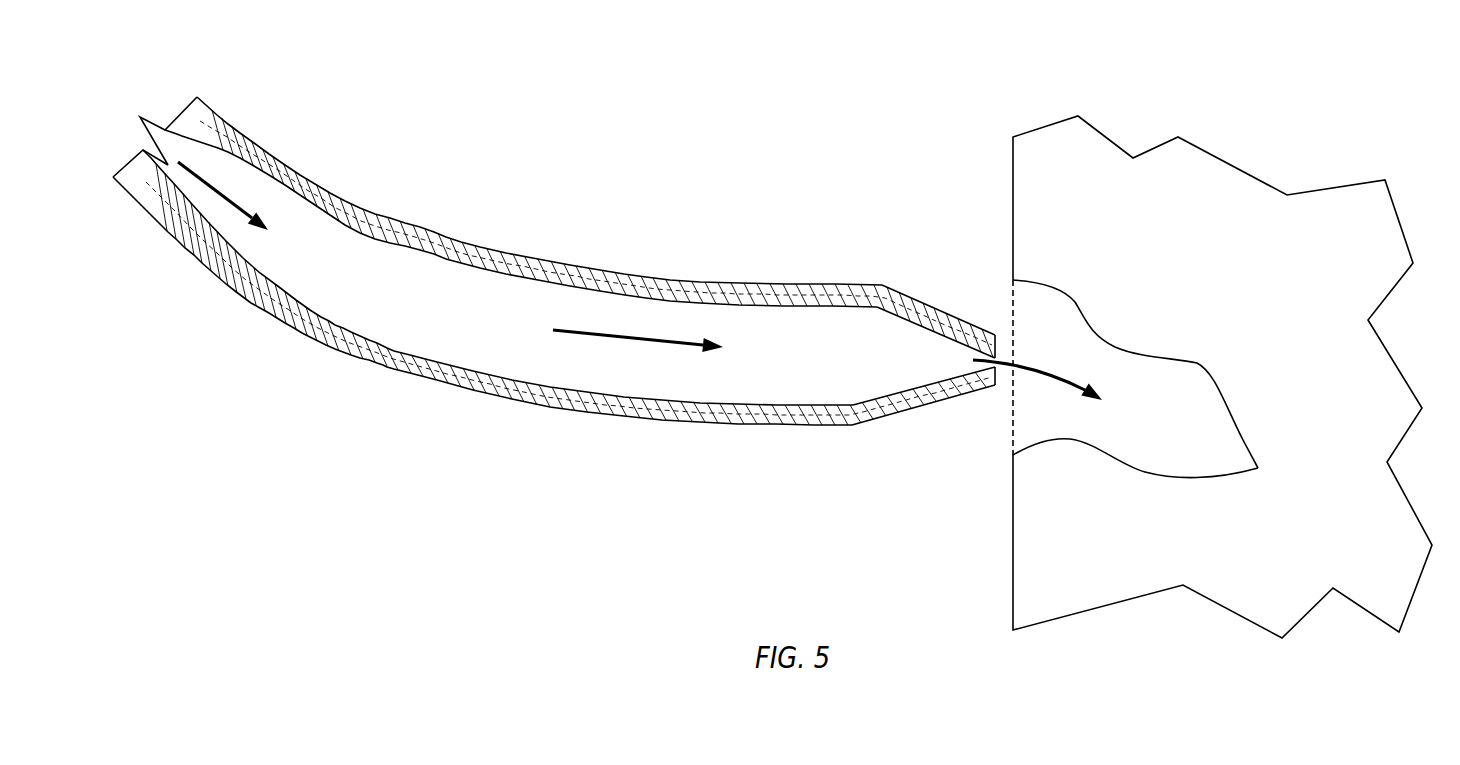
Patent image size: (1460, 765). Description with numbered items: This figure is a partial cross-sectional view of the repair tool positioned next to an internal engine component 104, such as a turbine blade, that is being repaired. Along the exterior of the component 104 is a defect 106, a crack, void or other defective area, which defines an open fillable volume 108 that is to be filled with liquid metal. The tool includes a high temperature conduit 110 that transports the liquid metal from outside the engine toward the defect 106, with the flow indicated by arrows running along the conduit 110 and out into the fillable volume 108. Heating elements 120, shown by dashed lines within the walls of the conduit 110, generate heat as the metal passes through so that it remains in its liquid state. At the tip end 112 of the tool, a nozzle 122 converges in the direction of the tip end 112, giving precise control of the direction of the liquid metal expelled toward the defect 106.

The internal engine component 104 is at (1232, 162).
The defect 106 is at (1072, 297).
The fillable volume 108 is at (1183, 424).
The high temperature conduit 110 is at (229, 118).
The tip end 112 is at (978, 327).
The heating elements 120 is at (515, 262).
The nozzle 122 is at (902, 288).